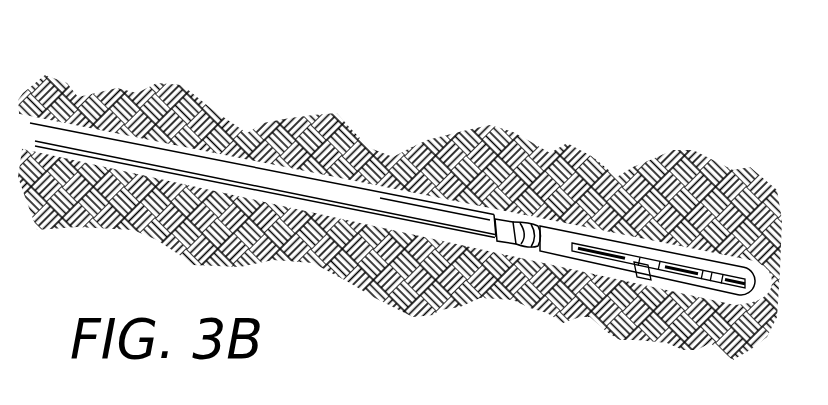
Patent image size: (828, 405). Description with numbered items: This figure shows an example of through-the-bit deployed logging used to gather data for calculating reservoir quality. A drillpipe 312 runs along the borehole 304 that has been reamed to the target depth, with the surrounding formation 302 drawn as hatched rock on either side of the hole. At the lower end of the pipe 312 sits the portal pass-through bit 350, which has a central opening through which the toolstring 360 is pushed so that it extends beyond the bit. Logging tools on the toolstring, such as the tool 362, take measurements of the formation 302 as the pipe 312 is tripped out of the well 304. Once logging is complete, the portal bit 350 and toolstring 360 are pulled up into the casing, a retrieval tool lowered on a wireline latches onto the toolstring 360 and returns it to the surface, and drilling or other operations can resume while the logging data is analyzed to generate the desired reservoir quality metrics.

The formation 302 is at (427, 278).
The borehole 304 is at (548, 306).
The drillpipe 312 is at (248, 134).
The portal pass-through bit 350 is at (550, 217).
The toolstring 360 is at (690, 262).
The logging tool 362 is at (674, 295).